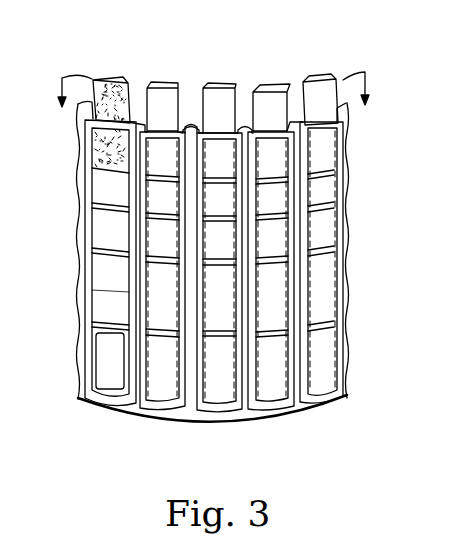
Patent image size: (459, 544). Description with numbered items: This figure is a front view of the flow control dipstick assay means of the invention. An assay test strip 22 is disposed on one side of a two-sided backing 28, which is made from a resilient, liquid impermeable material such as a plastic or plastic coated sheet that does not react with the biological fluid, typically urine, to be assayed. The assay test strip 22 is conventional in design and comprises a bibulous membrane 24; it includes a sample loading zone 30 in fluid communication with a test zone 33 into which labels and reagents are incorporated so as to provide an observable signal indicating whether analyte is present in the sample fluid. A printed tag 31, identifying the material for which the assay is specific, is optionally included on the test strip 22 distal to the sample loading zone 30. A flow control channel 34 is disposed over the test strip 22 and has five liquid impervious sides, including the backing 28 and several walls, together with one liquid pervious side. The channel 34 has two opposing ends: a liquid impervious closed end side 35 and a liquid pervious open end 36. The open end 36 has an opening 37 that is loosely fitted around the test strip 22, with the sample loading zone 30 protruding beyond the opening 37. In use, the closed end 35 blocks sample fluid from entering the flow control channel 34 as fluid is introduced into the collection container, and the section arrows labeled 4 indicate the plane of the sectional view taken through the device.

The backing 28 is at (346, 168).
The sample loading zone 30 is at (113, 77).
The opening 37 is at (158, 125).
The open end 36 is at (184, 118).
The printed tag 31 is at (93, 349).
The assay test strip 22 is at (94, 218).
The test zone 33 is at (108, 214).
The bibulous membrane 24 is at (104, 290).
The flow control channel 34 is at (128, 410).
The closed end side 35 is at (99, 408).
The section line 4- 4 is at (217, 92).